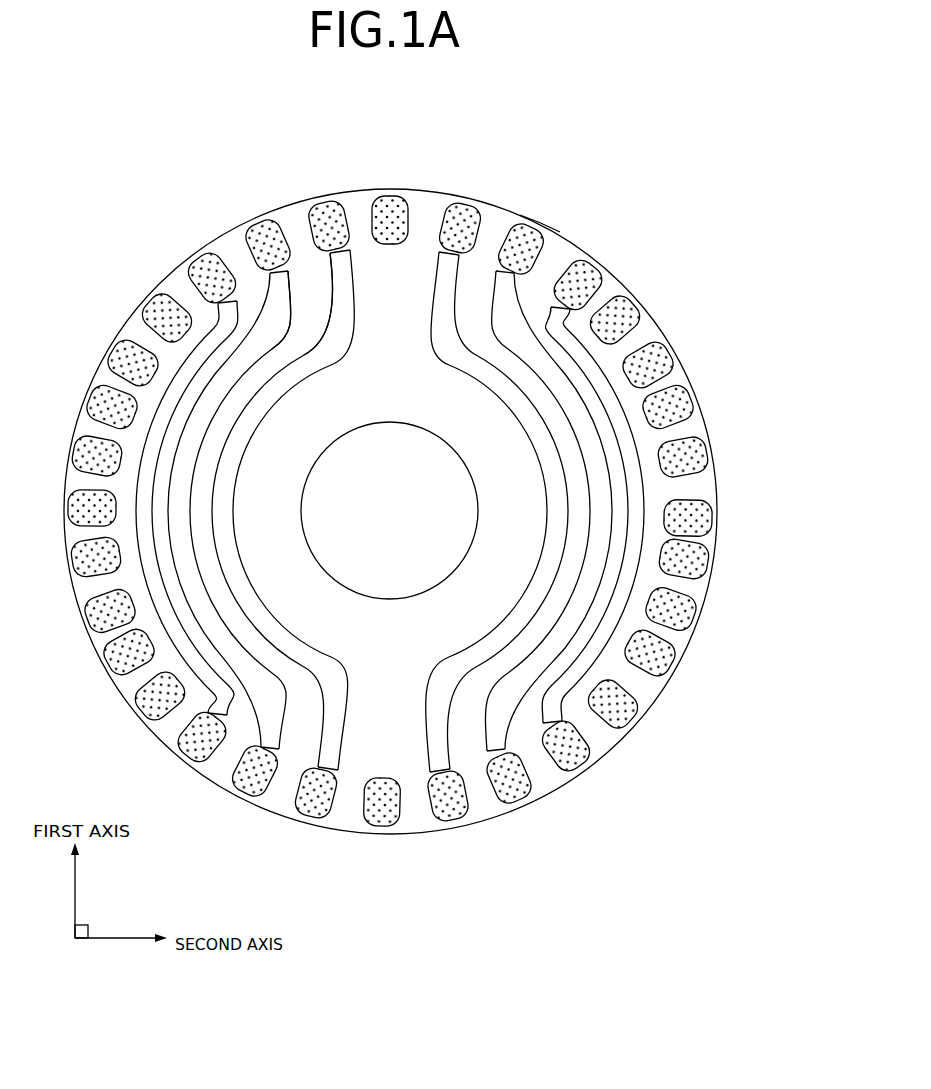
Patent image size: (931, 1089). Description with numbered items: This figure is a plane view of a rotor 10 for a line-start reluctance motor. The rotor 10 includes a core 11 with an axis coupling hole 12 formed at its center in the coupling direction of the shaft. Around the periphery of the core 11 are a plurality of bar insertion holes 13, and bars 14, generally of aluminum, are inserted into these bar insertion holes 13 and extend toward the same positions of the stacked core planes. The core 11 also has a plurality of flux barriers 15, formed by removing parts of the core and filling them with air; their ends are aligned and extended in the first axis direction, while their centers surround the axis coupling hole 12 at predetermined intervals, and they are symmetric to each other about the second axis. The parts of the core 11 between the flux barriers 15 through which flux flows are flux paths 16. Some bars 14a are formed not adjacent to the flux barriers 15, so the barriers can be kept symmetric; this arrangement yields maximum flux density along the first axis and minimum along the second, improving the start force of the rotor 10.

The rotor 10 is at (502, 162).
The core 11 is at (363, 190).
The axis coupling hole 12 is at (390, 599).
The bar insertion holes 13 is at (537, 232).
The bars 14 is at (508, 238).
The bars not adjacent to the flux barriers 14a is at (397, 207).
The flux barriers 15 is at (440, 280).
The flux paths 16 is at (383, 348).